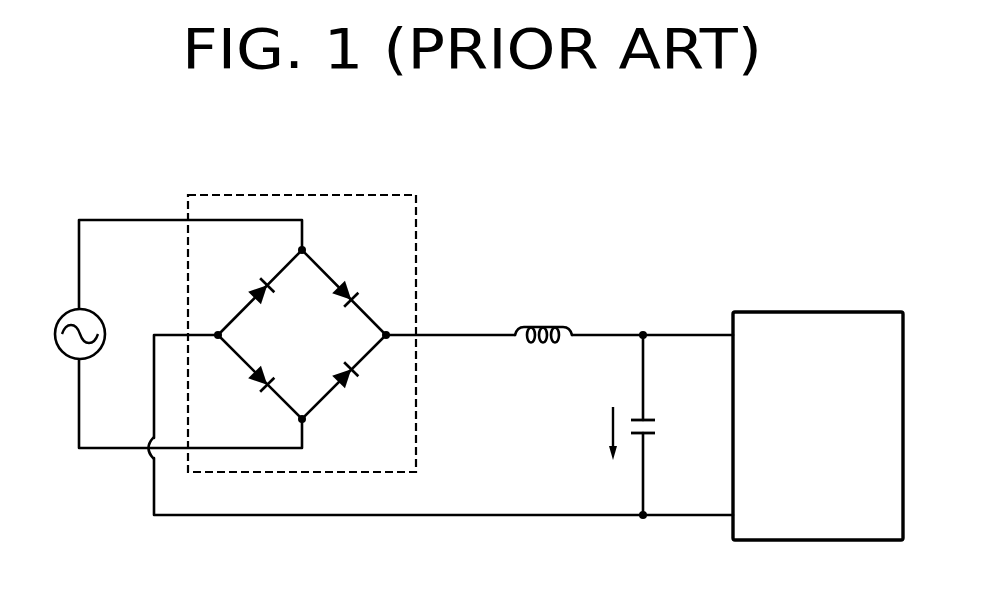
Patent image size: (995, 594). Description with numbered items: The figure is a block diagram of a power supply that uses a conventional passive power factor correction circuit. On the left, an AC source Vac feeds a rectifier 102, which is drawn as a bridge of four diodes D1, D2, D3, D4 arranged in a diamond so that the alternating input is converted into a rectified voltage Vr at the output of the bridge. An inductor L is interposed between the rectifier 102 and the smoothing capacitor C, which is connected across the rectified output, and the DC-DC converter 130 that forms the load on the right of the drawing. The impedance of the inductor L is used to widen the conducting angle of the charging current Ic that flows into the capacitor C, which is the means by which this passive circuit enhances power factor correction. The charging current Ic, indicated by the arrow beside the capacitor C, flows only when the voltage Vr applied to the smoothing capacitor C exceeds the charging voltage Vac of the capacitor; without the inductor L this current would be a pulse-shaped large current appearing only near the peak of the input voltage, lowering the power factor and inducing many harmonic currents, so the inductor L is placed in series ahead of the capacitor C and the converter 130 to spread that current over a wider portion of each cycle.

The rectifier 102 is at (302, 304).
The DC-DC converter 130 is at (816, 312).
The diode D1 is at (249, 282).
The diode D2 is at (356, 283).
The diode D3 is at (251, 389).
The diode D4 is at (356, 387).
The inductor L is at (543, 318).
The smoothing capacitor C is at (655, 428).
The charging voltage Vac is at (54, 334).
The voltage applied to the smoothing capacitor Vr is at (459, 333).
The charging current Ic is at (612, 419).